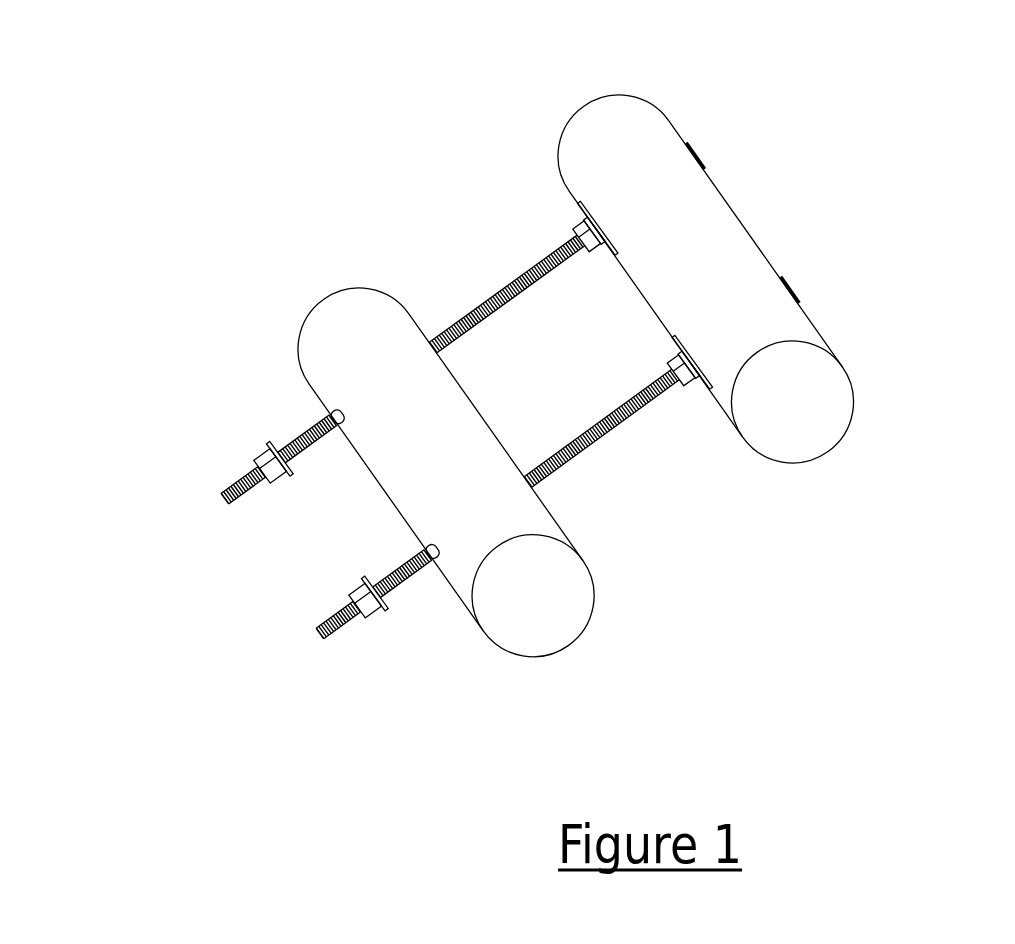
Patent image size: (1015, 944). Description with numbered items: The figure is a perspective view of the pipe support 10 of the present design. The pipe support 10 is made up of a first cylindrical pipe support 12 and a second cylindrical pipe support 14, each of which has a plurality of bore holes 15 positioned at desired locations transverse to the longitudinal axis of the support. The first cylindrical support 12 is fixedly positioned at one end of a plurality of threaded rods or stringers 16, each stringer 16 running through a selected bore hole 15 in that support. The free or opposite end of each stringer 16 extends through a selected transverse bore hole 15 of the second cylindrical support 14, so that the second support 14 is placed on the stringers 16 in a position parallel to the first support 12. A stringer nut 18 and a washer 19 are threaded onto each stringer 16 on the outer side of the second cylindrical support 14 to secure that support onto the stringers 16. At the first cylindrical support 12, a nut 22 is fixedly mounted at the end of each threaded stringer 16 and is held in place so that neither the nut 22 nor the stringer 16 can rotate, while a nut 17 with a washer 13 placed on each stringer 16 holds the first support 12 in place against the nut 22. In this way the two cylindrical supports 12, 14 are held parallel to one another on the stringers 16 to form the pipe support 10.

The pipe support 10 is at (552, 402).
The first cylindrical pipe support 12 is at (767, 279).
The washer 13 is at (614, 308).
The second cylindrical pipe support 14 is at (443, 472).
The bore hole 15 is at (429, 384).
The threaded rod or stringer 16 is at (496, 418).
The nut 17 is at (614, 353).
The stringer nut 18 is at (250, 554).
The washer 19 is at (247, 550).
The nut 22 is at (843, 205).